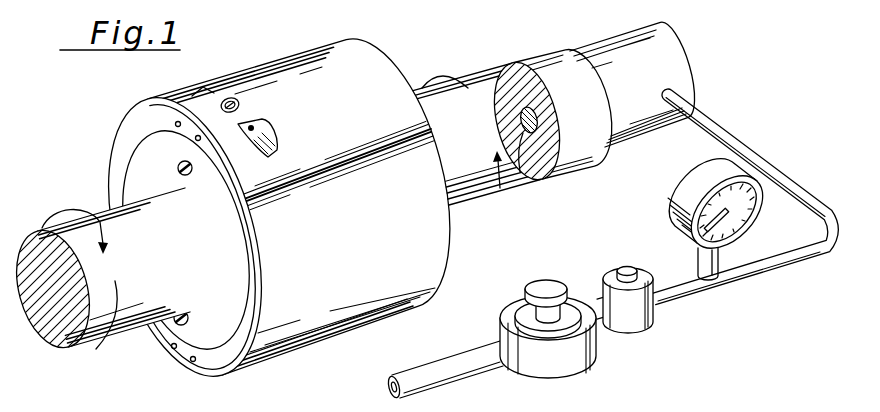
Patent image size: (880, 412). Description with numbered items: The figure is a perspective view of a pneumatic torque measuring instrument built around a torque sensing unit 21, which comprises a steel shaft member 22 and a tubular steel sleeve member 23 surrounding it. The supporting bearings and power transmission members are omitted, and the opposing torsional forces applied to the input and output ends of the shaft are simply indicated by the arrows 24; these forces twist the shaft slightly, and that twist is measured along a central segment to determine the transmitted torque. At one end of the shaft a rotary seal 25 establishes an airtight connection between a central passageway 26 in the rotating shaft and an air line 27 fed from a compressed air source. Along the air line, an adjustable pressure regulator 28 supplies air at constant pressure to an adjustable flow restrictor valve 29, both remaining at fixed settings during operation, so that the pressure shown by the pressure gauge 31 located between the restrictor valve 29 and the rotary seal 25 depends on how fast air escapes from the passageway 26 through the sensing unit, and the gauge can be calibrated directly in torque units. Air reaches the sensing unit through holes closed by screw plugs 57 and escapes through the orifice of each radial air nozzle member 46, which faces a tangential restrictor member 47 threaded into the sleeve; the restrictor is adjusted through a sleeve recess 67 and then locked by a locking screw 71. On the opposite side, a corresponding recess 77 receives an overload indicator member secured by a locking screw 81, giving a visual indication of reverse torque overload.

The torque sensing unit 21 is at (290, 211).
The shaft member 22 is at (99, 206).
The sleeve member 23 is at (440, 257).
The arrows 24 is at (99, 350).
The rotary seal 25 is at (684, 64).
The central passageway 26 is at (538, 182).
The air line 27 is at (462, 375).
The pressure regulator 28 is at (568, 378).
The flow restrictor valve 29 is at (634, 329).
The pressure gauge 31 is at (682, 185).
The radial air nozzle member 46 is at (239, 104).
The tangential restrictor member 47 is at (252, 126).
The screw plug 57 is at (178, 168).
The sleeve recess 67 is at (281, 128).
The locking screw 71 is at (202, 140).
The recess 77 is at (200, 89).
The locking screw 81 is at (175, 122).